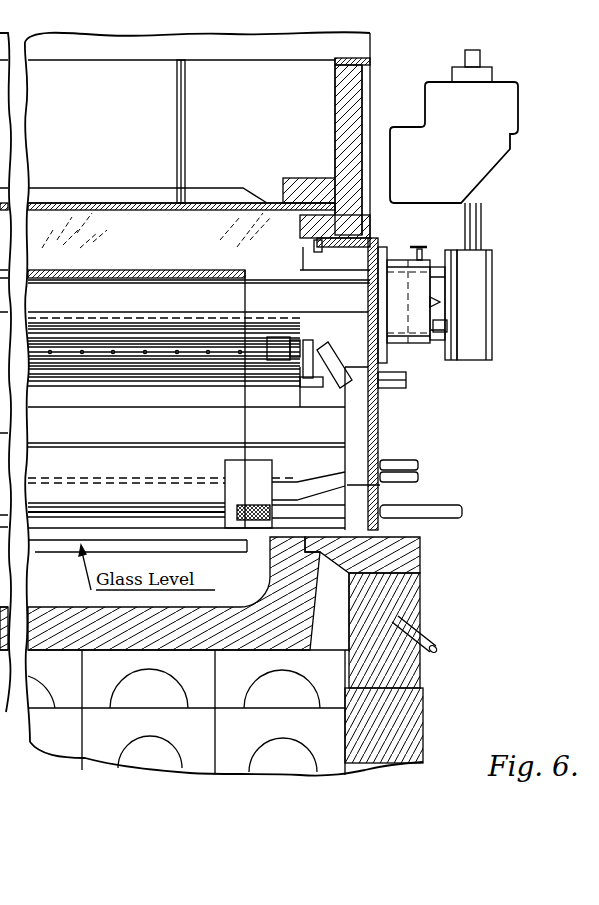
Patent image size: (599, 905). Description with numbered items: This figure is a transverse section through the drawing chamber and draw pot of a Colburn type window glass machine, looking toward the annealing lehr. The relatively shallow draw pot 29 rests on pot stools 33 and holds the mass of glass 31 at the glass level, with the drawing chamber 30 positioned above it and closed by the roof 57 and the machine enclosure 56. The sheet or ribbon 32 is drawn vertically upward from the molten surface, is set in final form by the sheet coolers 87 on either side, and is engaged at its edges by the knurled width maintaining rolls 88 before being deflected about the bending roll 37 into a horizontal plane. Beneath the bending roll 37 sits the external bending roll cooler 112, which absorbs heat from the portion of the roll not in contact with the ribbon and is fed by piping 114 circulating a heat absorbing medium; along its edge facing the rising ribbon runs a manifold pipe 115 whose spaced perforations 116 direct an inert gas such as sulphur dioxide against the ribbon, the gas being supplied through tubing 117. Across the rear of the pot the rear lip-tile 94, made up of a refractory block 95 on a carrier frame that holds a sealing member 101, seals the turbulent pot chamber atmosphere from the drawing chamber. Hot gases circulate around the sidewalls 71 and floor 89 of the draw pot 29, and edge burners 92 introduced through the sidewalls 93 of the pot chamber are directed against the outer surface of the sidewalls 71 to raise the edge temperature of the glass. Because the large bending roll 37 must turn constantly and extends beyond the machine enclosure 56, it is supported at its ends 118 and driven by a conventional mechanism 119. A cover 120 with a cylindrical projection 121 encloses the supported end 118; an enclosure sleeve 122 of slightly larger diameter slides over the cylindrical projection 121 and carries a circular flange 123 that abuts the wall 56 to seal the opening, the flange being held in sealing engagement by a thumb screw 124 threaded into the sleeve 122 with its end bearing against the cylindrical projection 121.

The draw pot 29 is at (108, 636).
The drawing chamber 30 is at (203, 245).
The mass of glass 31 is at (240, 601).
The sheet or ribbon 32 is at (98, 269).
The pot stools 33 is at (52, 727).
The bending roll 37 is at (262, 297).
The machine enclosure 56 is at (380, 422).
The roof 57 is at (105, 203).
The sidewalls of the draw pot 71 is at (267, 557).
The sheet coolers 87 is at (242, 482).
The knurled width maintaining rolls 88 is at (243, 506).
The floor 89 is at (198, 630).
The edge burners 92 is at (421, 647).
The sidewalls of the pot chamber 93 is at (398, 593).
The rear lip-tile 94 is at (110, 473).
The refractory block 95 is at (151, 465).
The sealing member 101 is at (57, 548).
The bending roll cooler 112 is at (70, 356).
The piping 114 is at (392, 382).
The manifold pipe 115 is at (125, 354).
The perforations 116 is at (176, 354).
The tubing 117 is at (320, 384).
The ends of the bending roll 118 is at (498, 283).
The drive mechanism 119 is at (527, 128).
The cover 120 is at (472, 337).
The cylindrical projection 121 is at (434, 277).
The enclosure sleeve 122 is at (394, 272).
The circular flange 123 is at (387, 352).
The thumb screw 124 is at (420, 246).